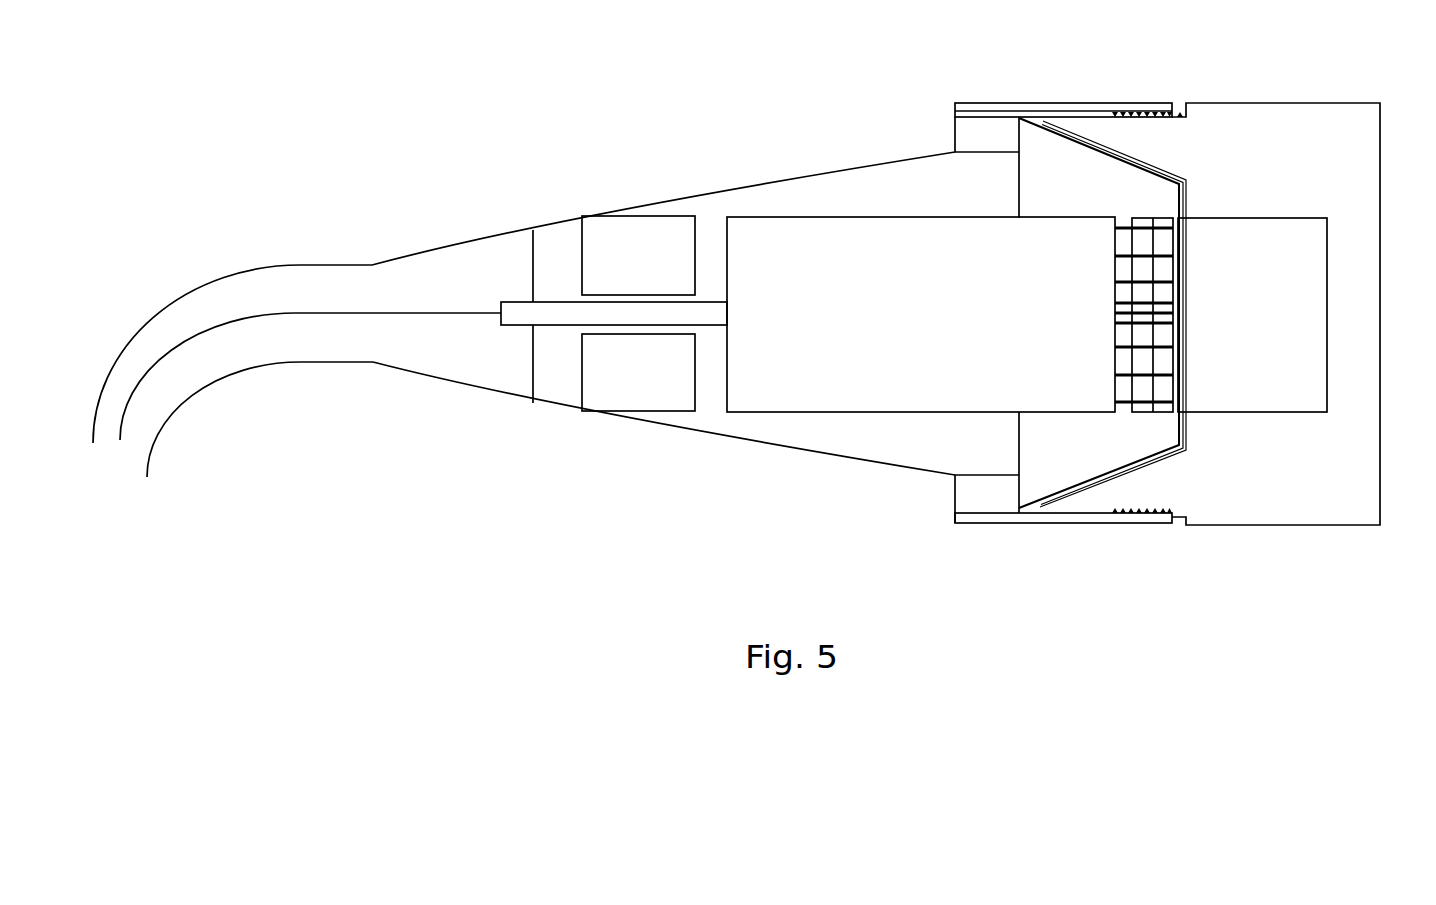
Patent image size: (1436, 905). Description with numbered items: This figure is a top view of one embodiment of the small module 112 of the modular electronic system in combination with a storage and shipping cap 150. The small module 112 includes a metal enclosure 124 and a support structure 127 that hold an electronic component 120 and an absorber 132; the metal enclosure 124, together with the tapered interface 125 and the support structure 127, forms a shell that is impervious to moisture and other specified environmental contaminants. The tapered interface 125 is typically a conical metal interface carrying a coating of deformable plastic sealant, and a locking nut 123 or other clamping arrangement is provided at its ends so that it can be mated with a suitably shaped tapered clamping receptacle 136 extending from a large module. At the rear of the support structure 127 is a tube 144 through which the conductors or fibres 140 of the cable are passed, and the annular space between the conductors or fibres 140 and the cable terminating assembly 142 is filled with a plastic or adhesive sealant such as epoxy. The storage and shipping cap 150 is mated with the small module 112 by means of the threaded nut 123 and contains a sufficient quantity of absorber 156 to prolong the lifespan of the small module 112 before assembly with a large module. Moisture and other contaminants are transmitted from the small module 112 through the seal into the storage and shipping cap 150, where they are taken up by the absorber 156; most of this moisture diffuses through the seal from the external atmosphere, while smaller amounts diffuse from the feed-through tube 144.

The small module 112 is at (857, 76).
The electronic component 120 is at (755, 378).
The locking nut 123 is at (968, 524).
The metal enclosure 124 is at (812, 455).
The tapered interface 125 is at (1058, 497).
The support structure 127 is at (573, 403).
The absorber 132 is at (663, 238).
The tapered clamping receptacle 136 is at (1132, 513).
The conductors or fibres 140 is at (330, 313).
The cable terminating assembly 142 is at (425, 358).
The tube 144 is at (500, 328).
The storage and shipping cap 150 is at (1363, 442).
The absorber 156 is at (1304, 284).